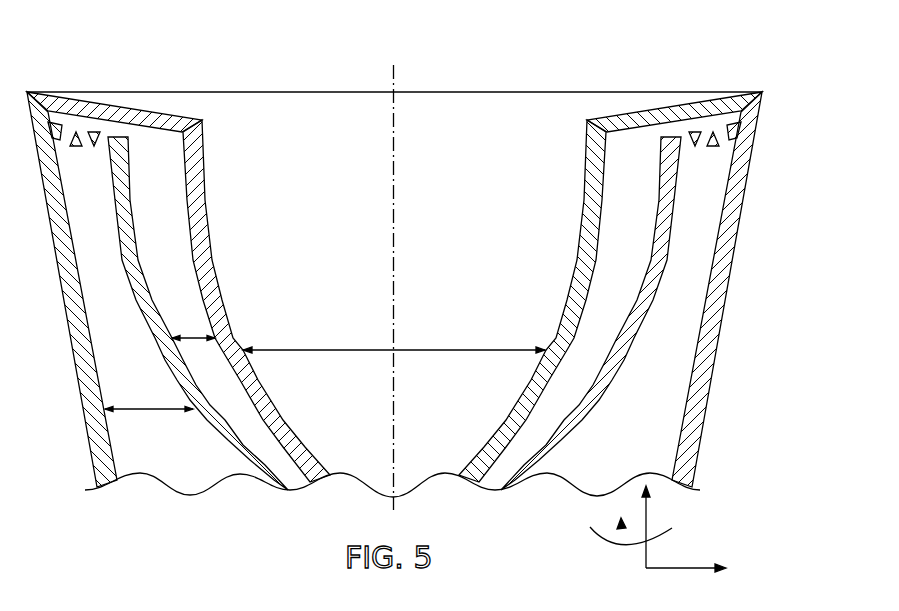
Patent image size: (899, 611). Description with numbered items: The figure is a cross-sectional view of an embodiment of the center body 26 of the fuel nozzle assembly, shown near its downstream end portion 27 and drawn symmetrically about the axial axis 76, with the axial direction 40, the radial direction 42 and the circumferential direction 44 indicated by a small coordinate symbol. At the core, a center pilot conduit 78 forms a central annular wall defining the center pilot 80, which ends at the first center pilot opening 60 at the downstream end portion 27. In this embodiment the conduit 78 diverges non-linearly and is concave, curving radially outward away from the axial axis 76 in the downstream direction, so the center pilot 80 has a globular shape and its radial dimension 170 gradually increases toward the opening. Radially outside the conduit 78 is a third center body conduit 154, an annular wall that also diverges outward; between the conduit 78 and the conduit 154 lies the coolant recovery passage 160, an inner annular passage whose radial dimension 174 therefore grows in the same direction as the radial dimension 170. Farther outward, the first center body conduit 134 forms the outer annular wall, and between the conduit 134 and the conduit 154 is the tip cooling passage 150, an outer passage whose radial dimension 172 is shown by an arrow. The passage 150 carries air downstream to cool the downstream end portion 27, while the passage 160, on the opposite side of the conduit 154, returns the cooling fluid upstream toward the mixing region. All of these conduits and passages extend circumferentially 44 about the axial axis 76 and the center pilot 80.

The center body 26 is at (685, 56).
The downstream end portion 27 is at (309, 76).
The first center pilot opening 60 is at (416, 116).
The axial axis 76 is at (394, 405).
The center pilot conduit 78 is at (222, 290).
The center pilot 80 is at (355, 192).
The first center body conduit 134 is at (58, 270).
The tip cooling passage 150 is at (143, 365).
The third center body conduit 154 is at (117, 243).
The coolant recovery passage 160 is at (171, 212).
The radial dimension of the center pilot 170 is at (420, 350).
The radial dimension of the tip cooling passage 172 is at (148, 412).
The radial dimension of the coolant recovery passage 174 is at (193, 339).
The axial direction 40 is at (646, 557).
The radial direction 42 is at (686, 568).
The circumferential direction 44 is at (623, 525).